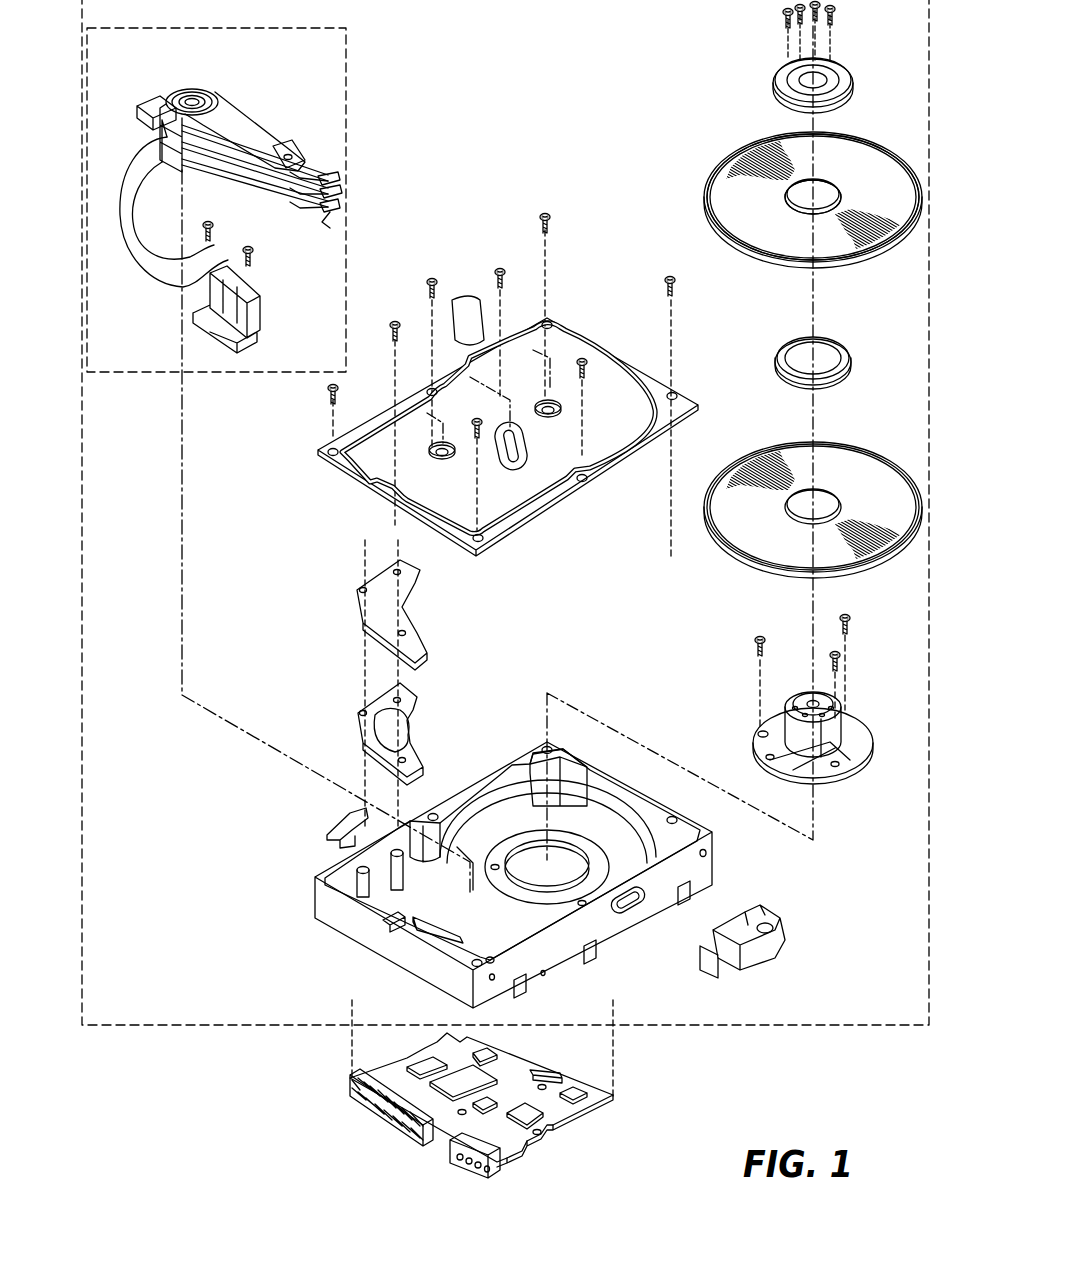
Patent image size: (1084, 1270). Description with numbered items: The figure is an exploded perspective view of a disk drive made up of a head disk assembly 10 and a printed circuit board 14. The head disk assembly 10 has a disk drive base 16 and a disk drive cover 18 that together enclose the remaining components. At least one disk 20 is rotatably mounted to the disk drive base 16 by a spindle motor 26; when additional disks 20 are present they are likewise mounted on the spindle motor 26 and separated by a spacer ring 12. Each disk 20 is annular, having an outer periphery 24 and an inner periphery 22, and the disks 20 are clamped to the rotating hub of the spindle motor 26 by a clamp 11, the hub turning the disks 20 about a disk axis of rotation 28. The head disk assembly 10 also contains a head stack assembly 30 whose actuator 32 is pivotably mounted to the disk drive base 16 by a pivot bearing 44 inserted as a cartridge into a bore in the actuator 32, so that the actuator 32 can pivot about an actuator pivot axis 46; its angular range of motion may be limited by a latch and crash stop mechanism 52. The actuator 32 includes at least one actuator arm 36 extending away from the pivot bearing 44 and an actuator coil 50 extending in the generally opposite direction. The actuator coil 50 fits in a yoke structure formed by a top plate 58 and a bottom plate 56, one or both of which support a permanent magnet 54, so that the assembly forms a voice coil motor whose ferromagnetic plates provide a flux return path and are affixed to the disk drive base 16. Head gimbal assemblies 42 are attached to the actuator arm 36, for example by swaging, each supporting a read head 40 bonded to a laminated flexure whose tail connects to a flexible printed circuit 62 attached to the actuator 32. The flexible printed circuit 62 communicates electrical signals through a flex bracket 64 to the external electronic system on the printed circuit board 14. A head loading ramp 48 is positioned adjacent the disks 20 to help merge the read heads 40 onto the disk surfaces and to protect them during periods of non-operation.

The head disk assembly 10 is at (718, 1025).
The clamp 11 is at (840, 68).
The spacer ring 12 is at (773, 365).
The printed circuit board 14 is at (585, 1122).
The disk drive base 16 is at (668, 910).
The disk drive cover 18 is at (548, 325).
The disk 20 is at (872, 152).
The inner periphery 22 is at (838, 190).
The outer periphery 24 is at (748, 262).
The spindle motor 26 is at (852, 765).
The disk axis of rotation 28 is at (813, 288).
The head stack assembly 30 is at (120, 383).
The actuator 32 is at (195, 85).
The actuator arm 36 is at (240, 120).
The read head 40 is at (320, 208).
The head gimbal assembly 42 is at (308, 168).
The pivot bearing 44 is at (200, 88).
The actuator pivot axis 46 is at (182, 578).
The head loading ramp 48 is at (790, 925).
The actuator coil 50 is at (152, 108).
The latch and crash stop mechanism 52 is at (330, 836).
The permanent magnet 54 is at (410, 705).
The bottom plate 56 is at (362, 728).
The top plate 58 is at (370, 612).
The flexible printed circuit 62 is at (152, 275).
The flex bracket 64 is at (265, 335).